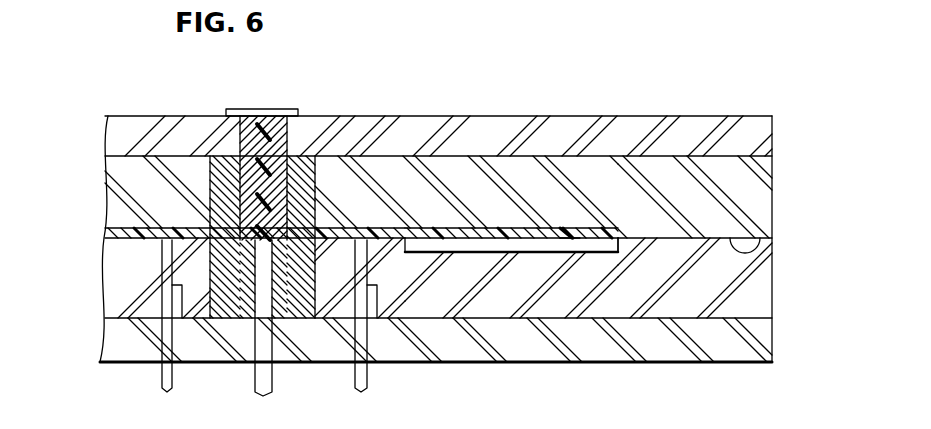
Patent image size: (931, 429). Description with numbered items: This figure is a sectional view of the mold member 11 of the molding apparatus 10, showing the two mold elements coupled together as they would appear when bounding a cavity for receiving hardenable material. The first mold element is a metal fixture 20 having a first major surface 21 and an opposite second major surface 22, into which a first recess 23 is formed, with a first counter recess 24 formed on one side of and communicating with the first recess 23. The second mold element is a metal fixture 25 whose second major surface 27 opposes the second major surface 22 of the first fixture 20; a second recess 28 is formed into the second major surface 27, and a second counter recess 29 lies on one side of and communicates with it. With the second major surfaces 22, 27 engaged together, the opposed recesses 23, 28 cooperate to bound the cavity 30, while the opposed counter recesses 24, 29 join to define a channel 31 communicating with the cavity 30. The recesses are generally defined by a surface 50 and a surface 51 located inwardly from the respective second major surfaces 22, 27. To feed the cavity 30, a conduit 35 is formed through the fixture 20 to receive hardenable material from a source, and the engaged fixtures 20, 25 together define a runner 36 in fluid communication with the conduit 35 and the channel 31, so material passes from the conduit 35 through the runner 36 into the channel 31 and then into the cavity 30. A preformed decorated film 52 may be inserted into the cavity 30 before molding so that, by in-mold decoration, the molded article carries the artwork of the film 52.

The apparatus 10 is at (622, 32).
The mold member 11 is at (774, 147).
The fixture 20 is at (660, 167).
The first major surface 21 is at (466, 116).
The second major surface 22 is at (770, 252).
The first recess 23 is at (600, 238).
The first counter recess 24 is at (372, 250).
The fixture 25 is at (748, 303).
The second major surface 27 is at (684, 238).
The second recess 28 is at (573, 232).
The second counter recess 29 is at (348, 235).
The cavity 30 is at (567, 235).
The channel 31 is at (377, 240).
The conduit 35 is at (295, 172).
The runner 36 is at (297, 162).
The surface 50 is at (480, 228).
The surface 51 is at (508, 252).
The film 52 is at (622, 237).